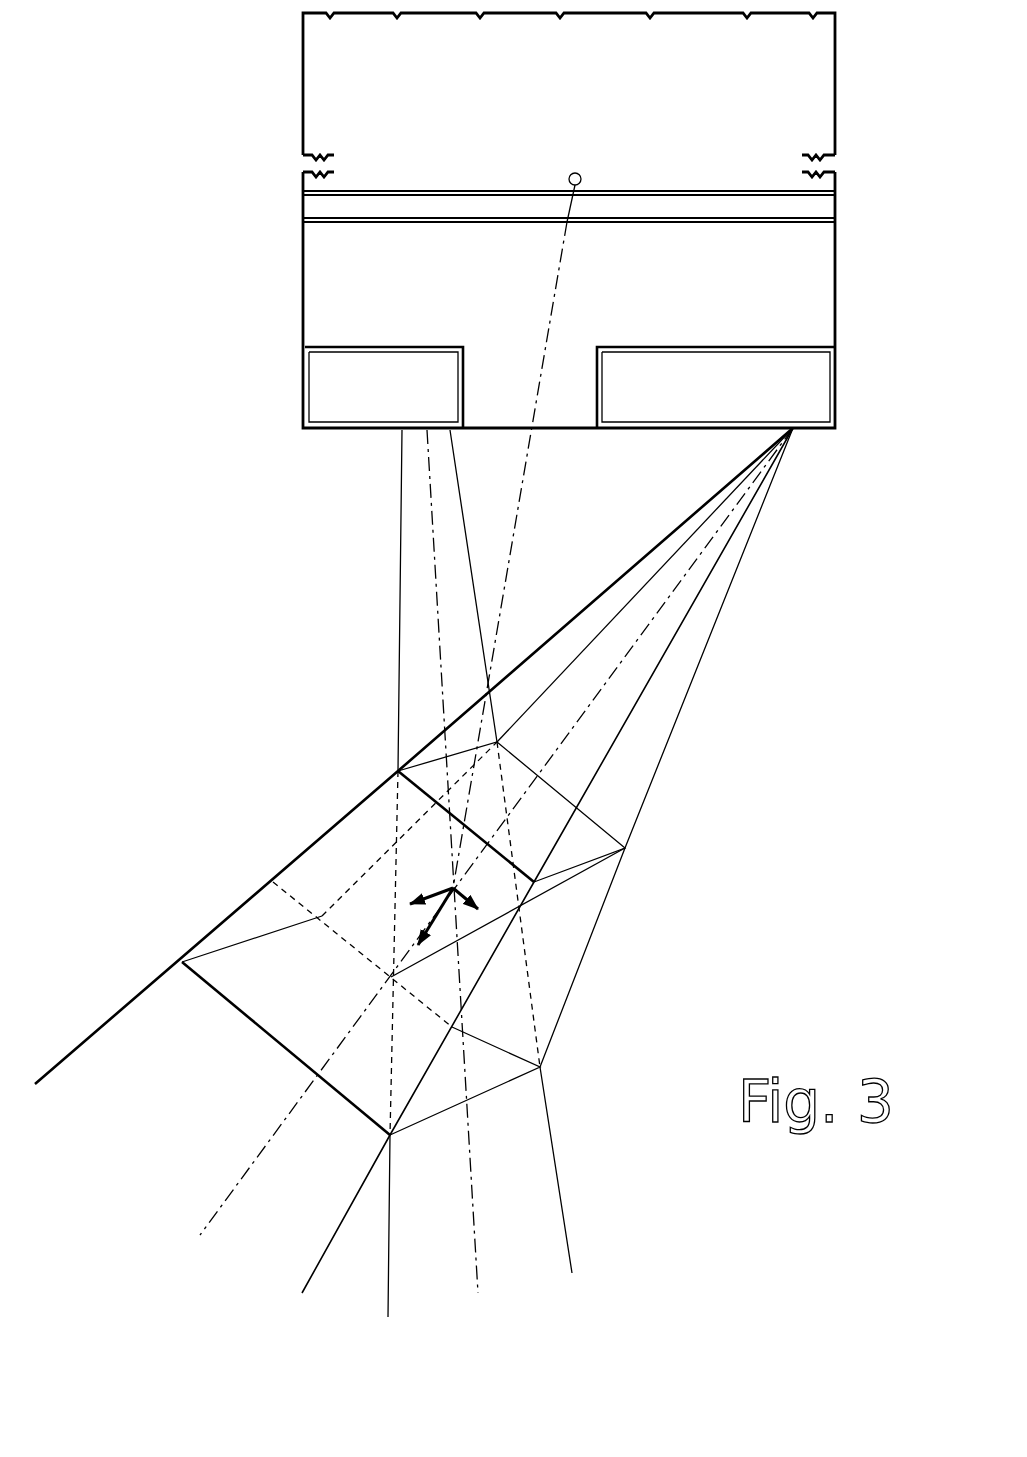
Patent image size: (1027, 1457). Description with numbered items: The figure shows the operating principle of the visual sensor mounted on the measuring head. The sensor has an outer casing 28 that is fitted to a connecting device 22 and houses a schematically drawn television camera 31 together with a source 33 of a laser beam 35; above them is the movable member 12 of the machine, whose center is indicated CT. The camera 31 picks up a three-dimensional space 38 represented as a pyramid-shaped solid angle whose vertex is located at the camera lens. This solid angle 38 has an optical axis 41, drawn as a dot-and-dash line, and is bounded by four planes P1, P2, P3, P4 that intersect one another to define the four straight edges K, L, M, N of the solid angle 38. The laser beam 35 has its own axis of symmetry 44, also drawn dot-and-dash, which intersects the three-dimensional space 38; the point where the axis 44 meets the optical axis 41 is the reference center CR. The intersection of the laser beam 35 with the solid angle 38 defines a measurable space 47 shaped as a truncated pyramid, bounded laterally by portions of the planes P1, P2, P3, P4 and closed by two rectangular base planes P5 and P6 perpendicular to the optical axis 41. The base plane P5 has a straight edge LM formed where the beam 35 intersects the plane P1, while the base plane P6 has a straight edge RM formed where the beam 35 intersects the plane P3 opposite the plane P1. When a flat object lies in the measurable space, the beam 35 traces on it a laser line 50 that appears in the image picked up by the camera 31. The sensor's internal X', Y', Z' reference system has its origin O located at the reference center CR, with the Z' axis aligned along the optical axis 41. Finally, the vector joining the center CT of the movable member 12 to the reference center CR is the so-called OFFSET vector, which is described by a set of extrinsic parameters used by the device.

The movable member 12 is at (842, 142).
The connecting device 22 is at (322, 207).
The outer casing 28 is at (300, 318).
The television camera 31 is at (812, 398).
The source of a laser beam 33 is at (362, 405).
The laser beam 35 is at (398, 573).
The three-dimensional space 38 is at (712, 661).
The optical axis 41 is at (620, 662).
The axis of symmetry 44 is at (437, 609).
The measurable space 47 is at (282, 865).
The laser line 50 is at (478, 908).
The center of movable member CT is at (628, 147).
The OFFSET vector OFFSET is at (552, 330).
The plane P1 is at (631, 564).
The plane P2 is at (626, 624).
The plane P3 is at (684, 649).
The plane P4 is at (719, 574).
The base plane P5 is at (542, 806).
The base plane P6 is at (298, 1015).
The edge K is at (356, 801).
The edge L is at (524, 907).
The edge M is at (626, 852).
The edge N is at (503, 743).
The straight edge LM is at (427, 758).
The straight edge RM is at (448, 1115).
The reference center CR is at (482, 877).
The origin O' O is at (451, 887).